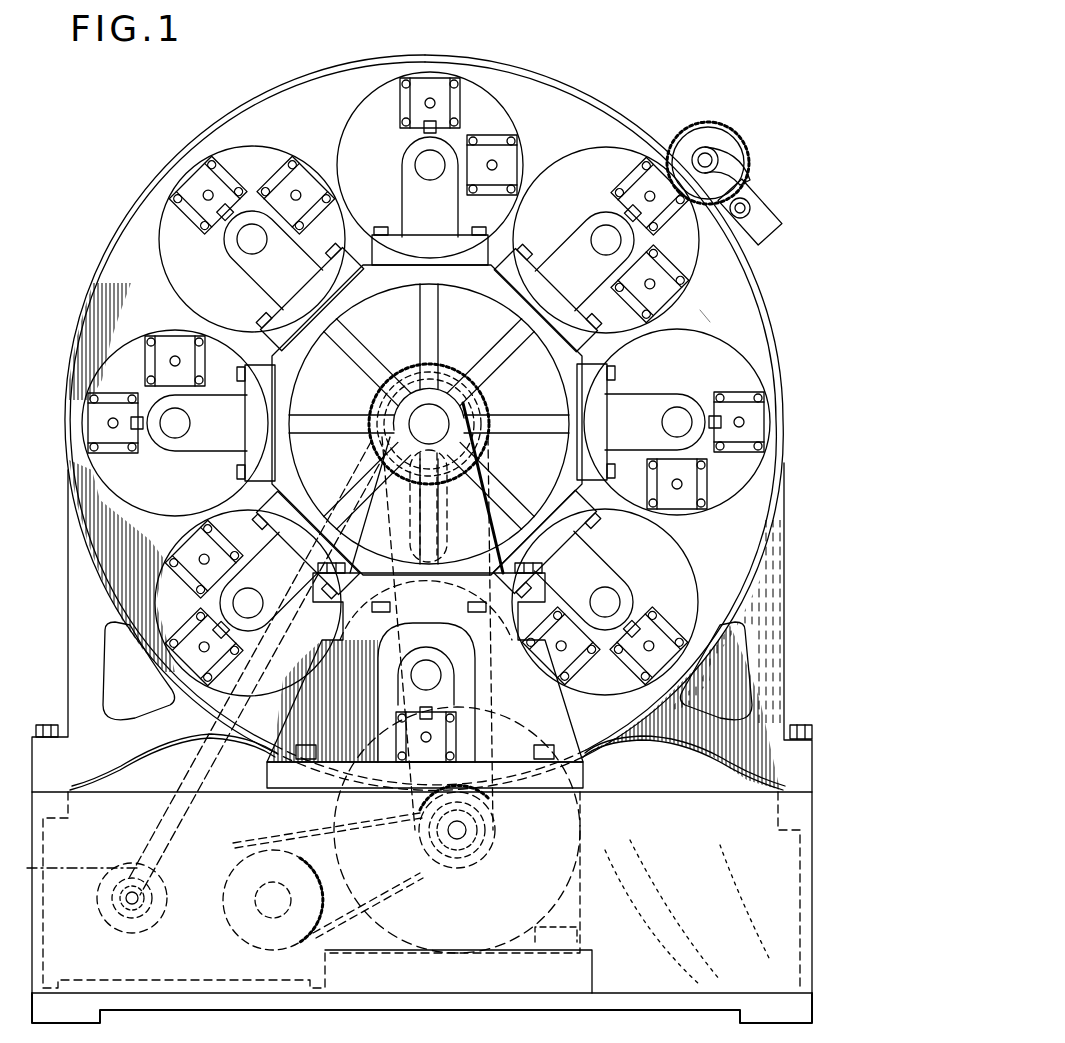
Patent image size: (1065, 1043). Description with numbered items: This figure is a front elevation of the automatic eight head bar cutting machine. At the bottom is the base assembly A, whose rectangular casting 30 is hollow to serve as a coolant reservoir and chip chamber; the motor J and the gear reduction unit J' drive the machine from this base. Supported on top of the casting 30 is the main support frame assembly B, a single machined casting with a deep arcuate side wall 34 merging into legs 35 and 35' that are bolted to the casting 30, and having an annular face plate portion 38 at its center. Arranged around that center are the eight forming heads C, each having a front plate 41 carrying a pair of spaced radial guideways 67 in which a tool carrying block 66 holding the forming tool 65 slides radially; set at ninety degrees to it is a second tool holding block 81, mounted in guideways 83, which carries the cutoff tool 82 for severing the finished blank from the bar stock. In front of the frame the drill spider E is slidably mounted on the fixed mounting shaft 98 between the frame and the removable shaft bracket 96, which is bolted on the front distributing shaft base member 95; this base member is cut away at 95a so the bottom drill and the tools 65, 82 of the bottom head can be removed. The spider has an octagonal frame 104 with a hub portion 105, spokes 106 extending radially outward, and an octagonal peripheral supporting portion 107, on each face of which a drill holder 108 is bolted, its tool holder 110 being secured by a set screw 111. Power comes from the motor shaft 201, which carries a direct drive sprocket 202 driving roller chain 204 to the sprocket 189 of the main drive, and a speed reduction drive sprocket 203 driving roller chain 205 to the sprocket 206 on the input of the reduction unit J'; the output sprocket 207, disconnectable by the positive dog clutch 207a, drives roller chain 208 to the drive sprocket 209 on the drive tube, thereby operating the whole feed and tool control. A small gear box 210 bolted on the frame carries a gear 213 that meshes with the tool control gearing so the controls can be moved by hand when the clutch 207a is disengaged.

The rectangular casting 30 is at (672, 990).
The arcuate side wall 34 is at (768, 318).
The legs 35 is at (103, 631).
The right support standard 35' is at (750, 627).
The face plate portion 38 is at (598, 118).
The front plate 41 is at (367, 97).
The forming tool 65 is at (218, 244).
The tool carrying block 66 is at (436, 80).
The radial guideways 67 is at (410, 78).
The second tool holding block 81 is at (512, 166).
The cutoff tool 82 is at (453, 134).
The guideways 83 is at (503, 142).
The front distributing shaft base member 95 is at (575, 720).
The cut away 95a is at (436, 636).
The removable shaft bracket 96 is at (490, 482).
The fixed mounting shaft 98 is at (418, 432).
The octagonal frame 104 is at (272, 400).
The hub portion 105 is at (400, 409).
The spokes 106 is at (488, 362).
The octagonal peripheral supporting portion 107 is at (382, 296).
The drill holder 108 is at (410, 182).
The tool holder 110 is at (412, 158).
The set screw 111 is at (410, 118).
The sprocket 189 is at (440, 548).
The shaft 201 is at (490, 832).
The direct drive sprocket 202 is at (462, 878).
The speed reduction drive sprocket 203 is at (487, 850).
The roller chain 204 is at (350, 823).
The roller chain 205 is at (292, 802).
The sprocket 206 is at (345, 843).
The sprocket 207 is at (122, 912).
The positive dog clutch 207a is at (170, 922).
The roller chain 208 is at (192, 768).
The drive sprocket 209 is at (416, 478).
The gear box 210 is at (760, 186).
The gear 213 is at (727, 132).
The base assembly A is at (535, 1008).
The main support frame assembly B is at (573, 80).
The forming heads C is at (497, 120).
The drill spider E is at (488, 298).
The motor J is at (602, 832).
The gear reduction unit J' is at (253, 818).